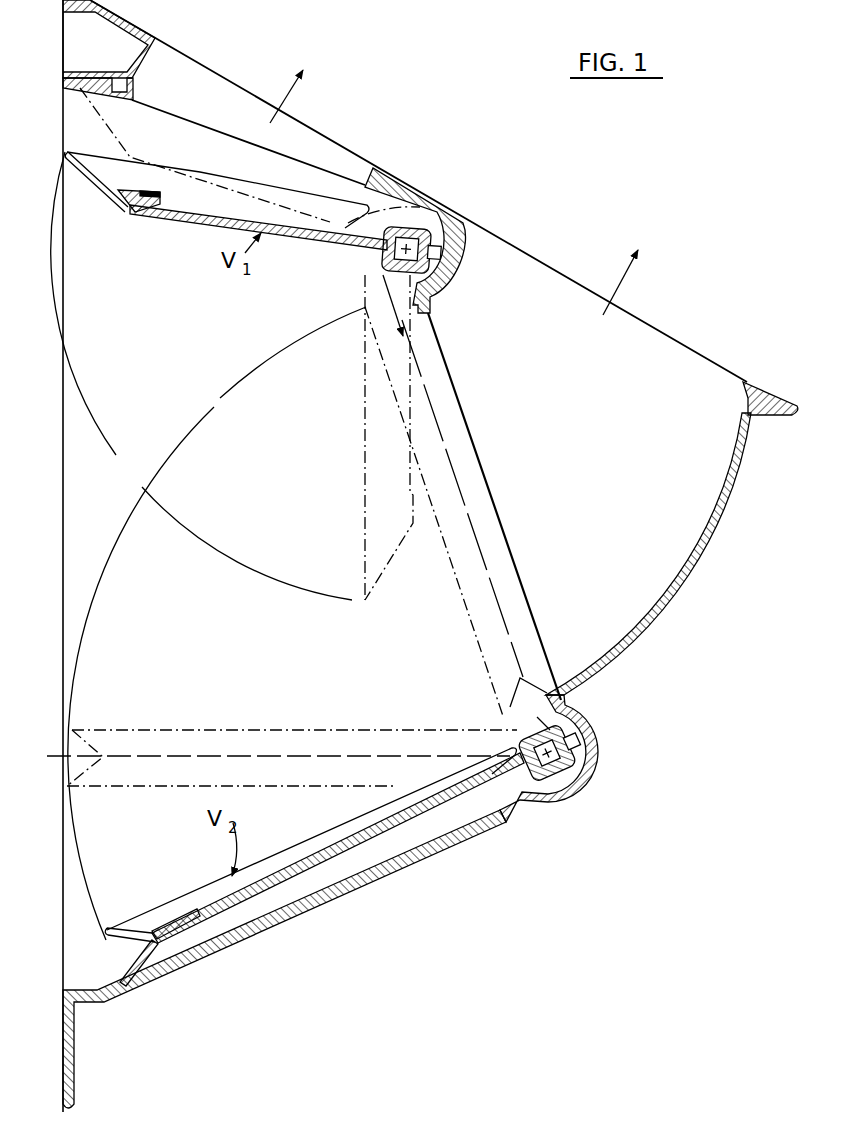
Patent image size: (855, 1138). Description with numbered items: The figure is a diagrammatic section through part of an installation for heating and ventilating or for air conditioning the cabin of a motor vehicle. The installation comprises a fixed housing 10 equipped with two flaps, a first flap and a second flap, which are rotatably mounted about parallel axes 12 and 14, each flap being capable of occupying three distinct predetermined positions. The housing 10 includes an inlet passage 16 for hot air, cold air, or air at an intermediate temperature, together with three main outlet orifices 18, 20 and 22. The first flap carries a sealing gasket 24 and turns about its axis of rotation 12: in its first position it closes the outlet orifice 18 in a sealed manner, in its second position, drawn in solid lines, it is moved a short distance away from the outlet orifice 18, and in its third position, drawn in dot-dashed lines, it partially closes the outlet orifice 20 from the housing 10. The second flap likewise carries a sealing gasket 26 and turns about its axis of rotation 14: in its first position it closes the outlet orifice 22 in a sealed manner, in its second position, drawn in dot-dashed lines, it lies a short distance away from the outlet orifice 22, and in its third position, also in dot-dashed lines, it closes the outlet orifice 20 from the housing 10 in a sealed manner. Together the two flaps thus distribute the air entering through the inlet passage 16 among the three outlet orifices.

The fixed housing 10 is at (689, 584).
The axis of rotation 12 is at (415, 232).
The axis of rotation 14 is at (567, 770).
The inlet passage 16 is at (77, 478).
The outlet orifice 18 is at (348, 145).
The outlet orifice 20 is at (575, 277).
The outlet orifice 22 is at (410, 862).
The sealing gasket 24 is at (97, 188).
The sealing gasket 26 is at (130, 920).